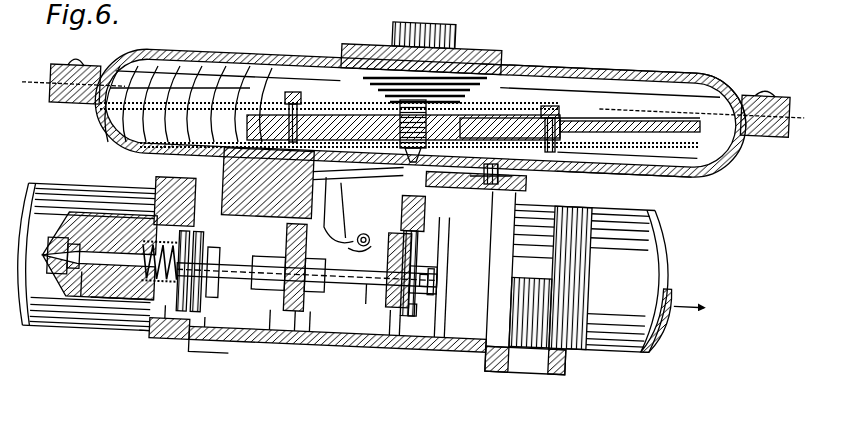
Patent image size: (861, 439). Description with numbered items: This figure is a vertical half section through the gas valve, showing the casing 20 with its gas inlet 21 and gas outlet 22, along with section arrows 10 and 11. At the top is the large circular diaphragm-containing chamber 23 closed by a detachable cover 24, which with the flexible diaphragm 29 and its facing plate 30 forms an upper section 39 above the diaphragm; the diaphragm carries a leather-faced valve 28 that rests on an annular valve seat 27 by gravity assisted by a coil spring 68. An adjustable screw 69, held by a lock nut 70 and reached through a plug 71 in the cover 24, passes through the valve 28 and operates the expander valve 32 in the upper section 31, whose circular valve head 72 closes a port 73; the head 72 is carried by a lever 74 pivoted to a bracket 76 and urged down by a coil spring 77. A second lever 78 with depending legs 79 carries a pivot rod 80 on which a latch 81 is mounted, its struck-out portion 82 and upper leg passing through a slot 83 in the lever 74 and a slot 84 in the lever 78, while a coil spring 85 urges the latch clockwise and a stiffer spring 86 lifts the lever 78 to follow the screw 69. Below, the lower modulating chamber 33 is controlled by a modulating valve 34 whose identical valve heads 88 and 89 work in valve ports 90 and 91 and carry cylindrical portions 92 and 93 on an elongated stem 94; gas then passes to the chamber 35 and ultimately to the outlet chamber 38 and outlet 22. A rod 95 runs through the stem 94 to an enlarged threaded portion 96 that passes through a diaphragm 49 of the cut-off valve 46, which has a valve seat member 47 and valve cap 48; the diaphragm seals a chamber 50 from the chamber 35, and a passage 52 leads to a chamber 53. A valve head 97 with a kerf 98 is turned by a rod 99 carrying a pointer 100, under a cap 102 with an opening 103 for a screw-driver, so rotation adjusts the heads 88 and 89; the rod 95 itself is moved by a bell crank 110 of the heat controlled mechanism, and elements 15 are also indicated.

The section line arrows 10 is at (33, 68).
The section line arrows 11 is at (216, 133).
The diaphragm plate 15 is at (306, 113).
The casing 20 is at (720, 167).
The gas inlet 21 is at (62, 327).
The gas outlet 22 is at (637, 343).
The diaphragm-containing chamber 23 is at (687, 170).
The cover 24 is at (683, 77).
The annular valve seat 27 is at (580, 120).
The leather-faced valve 28 is at (527, 123).
The flexible diaphragm 29 is at (717, 90).
The plate 30 is at (627, 121).
The upper section 31 is at (600, 205).
The expander valve 32 is at (508, 225).
The lower modulating chamber 33 is at (352, 325).
The modulating valve 34 is at (377, 297).
The chamber 35 is at (257, 317).
The outlet chamber 38 is at (460, 333).
The upper section 39 is at (578, 87).
The cut-off valve 46 is at (153, 348).
The valve seat member 47 is at (222, 350).
The valve cap 48 is at (170, 343).
The diaphragm 49 is at (223, 347).
The chamber 50 is at (213, 307).
The passage 52 is at (160, 215).
The chamber 53 is at (157, 293).
The coil spring 68 is at (383, 105).
The adjustable screw 69 is at (373, 110).
The lock nut 70 is at (418, 105).
The plug 71 is at (448, 43).
The circular valve head 72 is at (512, 178).
The port 73 is at (512, 260).
The lever 74 is at (473, 113).
The bracket 76 is at (323, 213).
The coil spring 77 is at (270, 100).
The second lever 78 is at (332, 112).
The legs 79 is at (393, 232).
The pivot rod 80 is at (385, 252).
The latch 81 is at (357, 213).
The struck-out portion 82 is at (445, 235).
The slot 83 is at (373, 287).
The slot 84 is at (440, 215).
The coil spring 85 is at (330, 273).
The spring 86 is at (270, 252).
The valve head 88 is at (262, 280).
The valve head 89 is at (425, 300).
The valve port 90 is at (312, 343).
The valve port 91 is at (413, 347).
The cylindrical portion 92 is at (283, 355).
The cylindrical portion 93 is at (407, 340).
The elongated stem 94 is at (322, 360).
The rod 95 is at (430, 262).
The enlarged threaded portion 96 is at (238, 278).
The valve head 97 is at (103, 215).
The kerf 98 is at (183, 310).
The rod 99 is at (150, 245).
The pointer 100 is at (96, 300).
The cap 102 is at (74, 297).
The opening 103 is at (36, 215).
The bell crank 110 is at (440, 282).